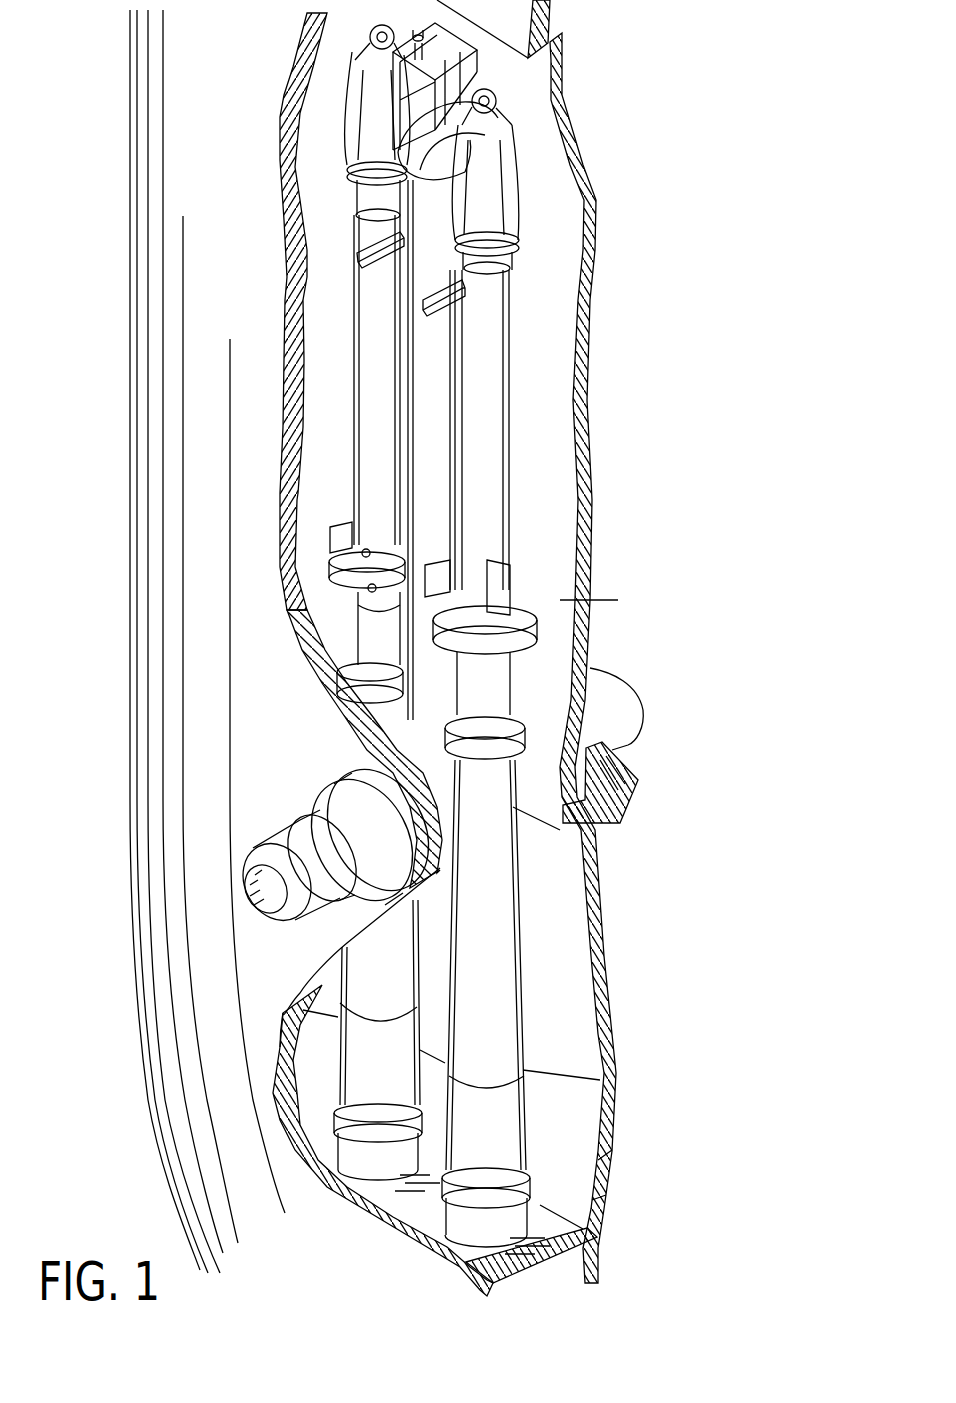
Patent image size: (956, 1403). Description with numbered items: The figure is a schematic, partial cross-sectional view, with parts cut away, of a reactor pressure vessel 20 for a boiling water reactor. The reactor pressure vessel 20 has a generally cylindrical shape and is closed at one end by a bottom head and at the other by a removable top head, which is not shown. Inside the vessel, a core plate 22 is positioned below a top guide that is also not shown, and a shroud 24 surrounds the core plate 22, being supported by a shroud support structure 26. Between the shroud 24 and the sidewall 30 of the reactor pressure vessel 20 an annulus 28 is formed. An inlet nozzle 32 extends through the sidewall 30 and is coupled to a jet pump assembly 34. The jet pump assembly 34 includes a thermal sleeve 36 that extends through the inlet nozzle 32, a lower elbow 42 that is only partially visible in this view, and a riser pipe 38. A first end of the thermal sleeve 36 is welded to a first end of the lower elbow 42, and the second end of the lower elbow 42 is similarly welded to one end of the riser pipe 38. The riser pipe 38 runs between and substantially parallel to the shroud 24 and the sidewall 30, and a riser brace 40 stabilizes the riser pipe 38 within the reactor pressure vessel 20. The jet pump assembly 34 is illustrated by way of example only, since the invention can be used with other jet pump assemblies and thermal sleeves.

The reactor pressure vessel 20 is at (150, 1158).
The core plate 22 is at (620, 700).
The shroud 24 is at (618, 600).
The shroud support structure 26 is at (612, 1152).
The annulus 28 is at (567, 481).
The sidewall 30 is at (278, 1097).
The inlet nozzle 32 is at (300, 805).
The jet pump assembly 34 is at (328, 468).
The thermal sleeve 36 is at (246, 893).
The riser pipe 38 is at (410, 428).
The riser brace 40 is at (358, 266).
The lower elbow 42 is at (432, 768).